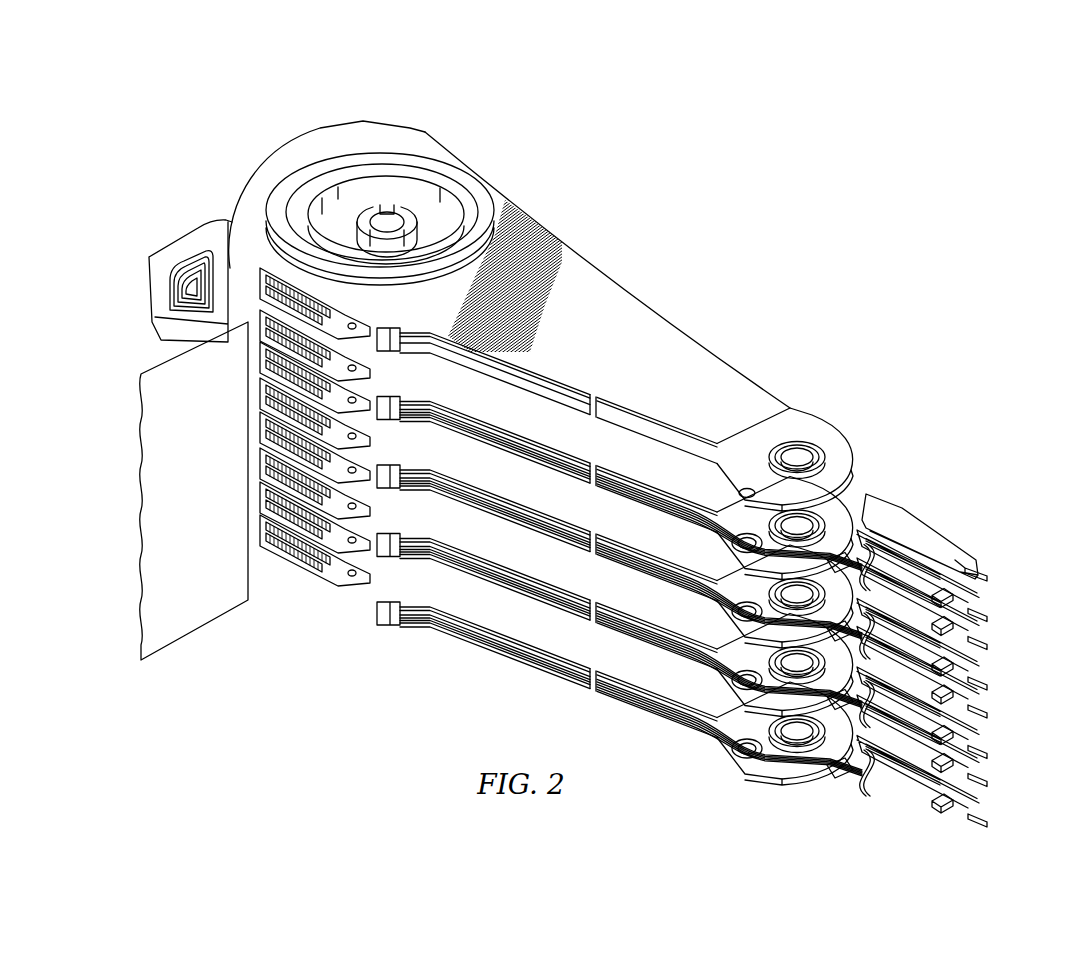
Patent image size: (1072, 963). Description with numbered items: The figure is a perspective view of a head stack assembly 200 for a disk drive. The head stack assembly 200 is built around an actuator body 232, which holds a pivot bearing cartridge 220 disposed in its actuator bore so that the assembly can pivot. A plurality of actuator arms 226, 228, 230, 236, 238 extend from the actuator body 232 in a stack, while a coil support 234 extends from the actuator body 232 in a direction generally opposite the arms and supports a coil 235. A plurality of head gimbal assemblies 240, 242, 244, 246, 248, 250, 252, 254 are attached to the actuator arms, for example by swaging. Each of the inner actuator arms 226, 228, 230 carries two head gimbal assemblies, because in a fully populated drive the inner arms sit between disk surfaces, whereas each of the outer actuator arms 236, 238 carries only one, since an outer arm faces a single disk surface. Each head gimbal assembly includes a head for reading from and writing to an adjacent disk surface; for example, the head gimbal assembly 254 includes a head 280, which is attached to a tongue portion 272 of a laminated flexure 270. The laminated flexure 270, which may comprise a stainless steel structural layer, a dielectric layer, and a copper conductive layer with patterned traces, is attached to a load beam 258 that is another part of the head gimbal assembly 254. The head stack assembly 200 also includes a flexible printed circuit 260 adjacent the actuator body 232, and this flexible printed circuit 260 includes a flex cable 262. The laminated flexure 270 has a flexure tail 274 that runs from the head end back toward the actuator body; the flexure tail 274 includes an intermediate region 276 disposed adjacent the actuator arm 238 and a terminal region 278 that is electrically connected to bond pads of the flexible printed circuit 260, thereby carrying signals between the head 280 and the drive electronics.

The head stack assembly 200 is at (834, 223).
The pivot bearing cartridge 220 is at (427, 211).
The actuator arm 226 is at (712, 523).
The actuator arm 228 is at (717, 661).
The actuator arm 230 is at (717, 592).
The actuator body 232 is at (268, 173).
The coil support 234 is at (172, 258).
The coil 235 is at (203, 254).
The actuator arm 236 is at (626, 300).
The actuator arm 238 is at (677, 728).
The head gimbal assembly 240 is at (907, 528).
The head gimbal assembly 242 is at (975, 612).
The head gimbal assembly 244 is at (985, 641).
The head gimbal assembly 246 is at (983, 686).
The head gimbal assembly 248 is at (985, 712).
The head gimbal assembly 250 is at (983, 752).
The head gimbal assembly 252 is at (985, 780).
The head gimbal assembly 254 is at (938, 805).
The load beam 258 is at (853, 780).
The flexible printed circuit 260 is at (297, 527).
The flex cable 262 is at (185, 627).
The laminated flexure 270 is at (860, 790).
The tongue portion 272 is at (943, 817).
The flexure tail 274 is at (738, 752).
The intermediate region 276 is at (598, 690).
The terminal region 278 is at (347, 583).
The head 280 is at (933, 798).